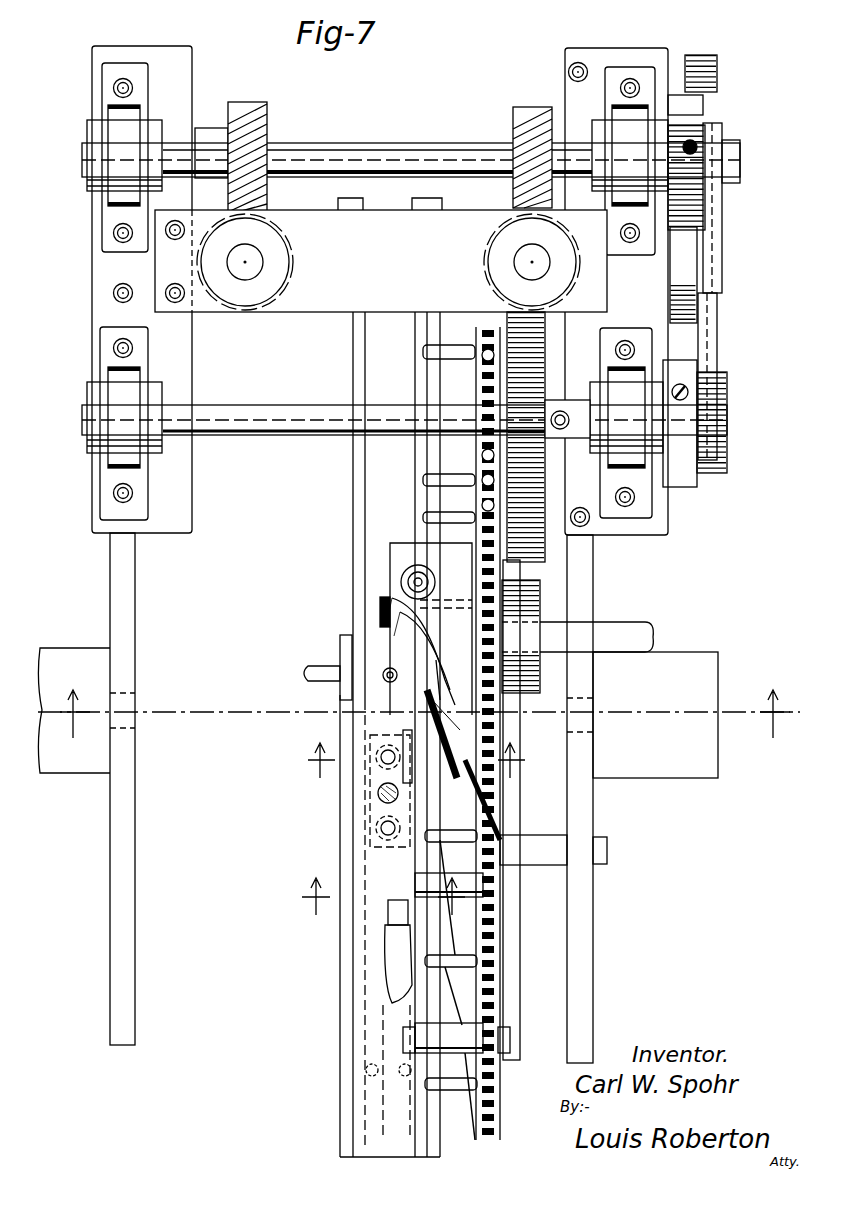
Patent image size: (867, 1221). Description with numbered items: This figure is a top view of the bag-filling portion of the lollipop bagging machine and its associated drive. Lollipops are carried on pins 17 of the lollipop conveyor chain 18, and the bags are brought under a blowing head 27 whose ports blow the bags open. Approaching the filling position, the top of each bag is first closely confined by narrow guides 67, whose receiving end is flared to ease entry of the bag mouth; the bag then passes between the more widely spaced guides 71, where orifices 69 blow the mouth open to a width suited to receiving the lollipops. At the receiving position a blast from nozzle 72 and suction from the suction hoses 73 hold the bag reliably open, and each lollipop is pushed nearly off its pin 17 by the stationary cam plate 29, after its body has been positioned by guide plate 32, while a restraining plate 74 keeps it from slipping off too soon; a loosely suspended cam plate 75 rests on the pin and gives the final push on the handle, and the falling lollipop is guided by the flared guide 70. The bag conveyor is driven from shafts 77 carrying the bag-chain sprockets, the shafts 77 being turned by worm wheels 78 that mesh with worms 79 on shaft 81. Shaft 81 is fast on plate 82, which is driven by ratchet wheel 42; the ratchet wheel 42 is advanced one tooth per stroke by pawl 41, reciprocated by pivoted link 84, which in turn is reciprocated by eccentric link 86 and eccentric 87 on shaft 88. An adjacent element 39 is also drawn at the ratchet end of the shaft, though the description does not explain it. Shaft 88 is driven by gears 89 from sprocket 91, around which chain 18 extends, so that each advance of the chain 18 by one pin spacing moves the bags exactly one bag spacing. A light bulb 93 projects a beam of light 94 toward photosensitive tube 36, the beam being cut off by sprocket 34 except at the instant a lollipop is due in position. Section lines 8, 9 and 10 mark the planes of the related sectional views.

The pin 17 is at (423, 350).
The chain 18 is at (475, 333).
The blowing head 27 is at (362, 815).
The stationary cam plate 29 is at (437, 688).
The guide plate 32 is at (455, 735).
The sprocket 34 is at (502, 648).
The photosensitive tube 36 is at (700, 677).
The gear 39 is at (712, 130).
The pawl 41 is at (722, 212).
The ratchet wheel 42 is at (717, 80).
The guides 67 is at (395, 1003).
The orifices 69 is at (376, 752).
The flared guide 70 is at (352, 688).
The guides 71 is at (415, 497).
The nozzle 72 is at (390, 668).
The suction hoses 73 is at (322, 670).
The restraining plate 74 is at (412, 770).
The cam plate 75 is at (390, 543).
The shaft 77 is at (262, 262).
The worm wheel 78 is at (262, 228).
The worm 79 is at (267, 120).
The shaft 81 is at (412, 150).
The plate 82 is at (703, 106).
The pivoted link 84 is at (697, 310).
The eccentric link 86 is at (717, 340).
The eccentric 87 is at (722, 448).
The shaft 88 is at (600, 437).
The gears 89 is at (545, 392).
The sprocket 91 is at (482, 455).
The light bulb 93 is at (82, 650).
The beam of light 94 is at (212, 712).
The section 8- 8 is at (423, 714).
The section 9- 9 is at (378, 897).
The section 10- 10 is at (412, 760).